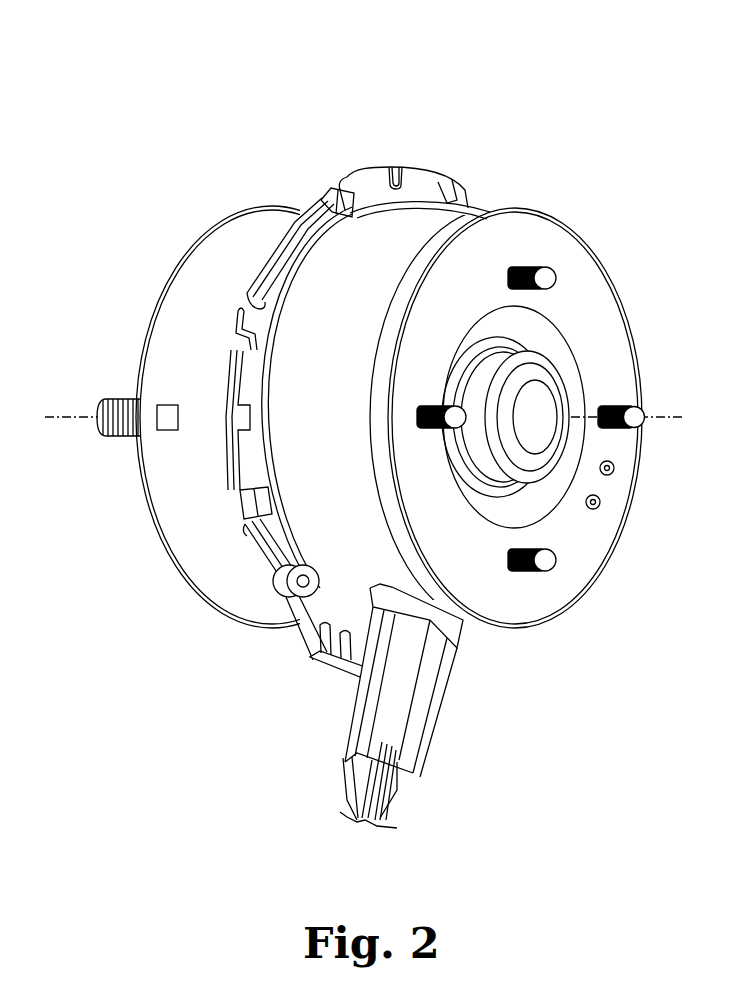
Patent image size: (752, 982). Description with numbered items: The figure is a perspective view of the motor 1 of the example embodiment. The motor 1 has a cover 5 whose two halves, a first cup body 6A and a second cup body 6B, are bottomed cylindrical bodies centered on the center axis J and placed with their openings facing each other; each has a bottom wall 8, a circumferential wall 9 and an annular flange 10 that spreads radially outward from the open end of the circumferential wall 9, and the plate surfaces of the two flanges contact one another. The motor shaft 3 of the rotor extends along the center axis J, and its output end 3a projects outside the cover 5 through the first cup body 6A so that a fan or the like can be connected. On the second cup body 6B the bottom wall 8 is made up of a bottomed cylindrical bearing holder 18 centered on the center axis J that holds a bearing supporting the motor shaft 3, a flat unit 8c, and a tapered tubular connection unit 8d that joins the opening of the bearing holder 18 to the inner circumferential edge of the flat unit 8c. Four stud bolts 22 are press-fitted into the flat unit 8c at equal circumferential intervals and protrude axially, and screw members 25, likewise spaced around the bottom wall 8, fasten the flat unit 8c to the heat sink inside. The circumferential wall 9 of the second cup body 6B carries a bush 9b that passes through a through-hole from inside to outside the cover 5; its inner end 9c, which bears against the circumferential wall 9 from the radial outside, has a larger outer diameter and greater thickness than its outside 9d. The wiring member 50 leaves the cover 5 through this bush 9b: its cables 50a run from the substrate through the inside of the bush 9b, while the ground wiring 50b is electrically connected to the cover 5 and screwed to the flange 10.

The motor 1 is at (375, 438).
The motor shaft 3 is at (100, 449).
The output end 3a is at (110, 438).
The cover 5 is at (342, 359).
The first cup body 6A is at (272, 358).
The second cup body 6B is at (262, 90).
The bottom wall 8 is at (537, 440).
The flat unit 8c is at (552, 250).
The connection unit 8d is at (552, 342).
The circumferential wall 9 is at (363, 710).
The bush 9b is at (420, 692).
The inner end 9c is at (447, 637).
The outside 9d is at (407, 742).
The flange 10 is at (280, 253).
The bearing holder 18 is at (488, 466).
The stud bolt 22 is at (625, 400).
The screw member 25 is at (601, 501).
The wiring member 50 is at (412, 798).
The cable 50a is at (400, 782).
The ground wiring 50b is at (333, 670).
The center axis J is at (60, 416).